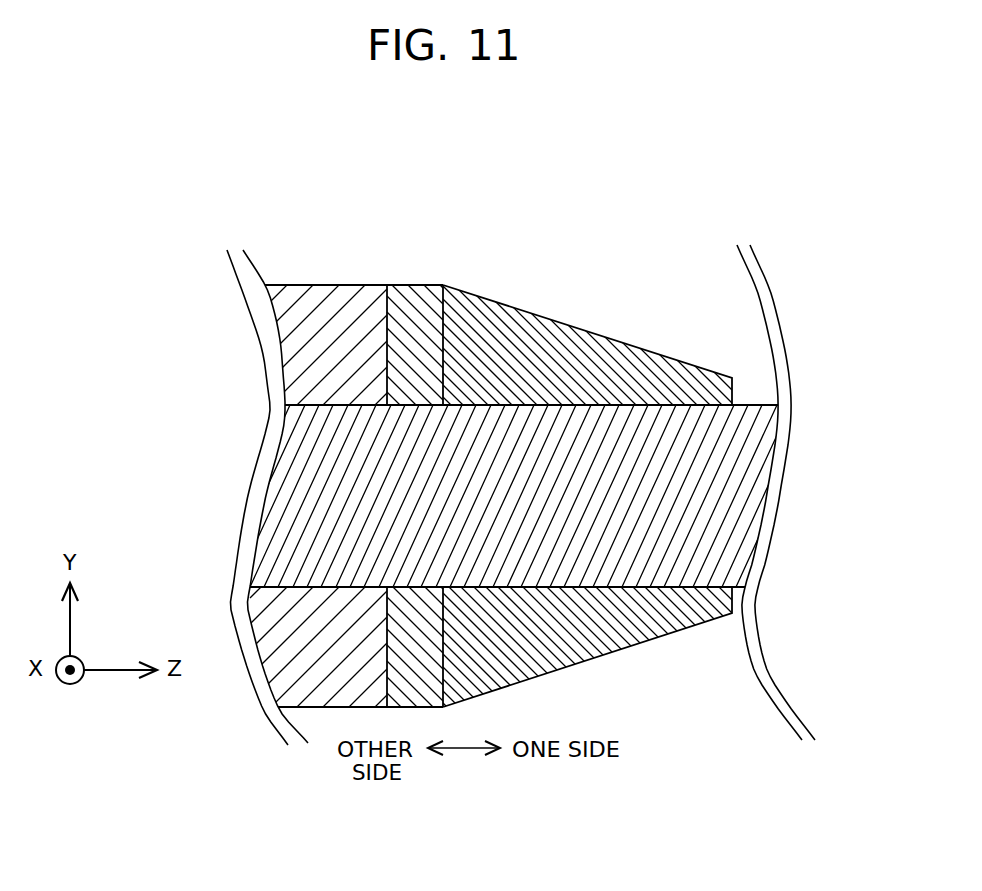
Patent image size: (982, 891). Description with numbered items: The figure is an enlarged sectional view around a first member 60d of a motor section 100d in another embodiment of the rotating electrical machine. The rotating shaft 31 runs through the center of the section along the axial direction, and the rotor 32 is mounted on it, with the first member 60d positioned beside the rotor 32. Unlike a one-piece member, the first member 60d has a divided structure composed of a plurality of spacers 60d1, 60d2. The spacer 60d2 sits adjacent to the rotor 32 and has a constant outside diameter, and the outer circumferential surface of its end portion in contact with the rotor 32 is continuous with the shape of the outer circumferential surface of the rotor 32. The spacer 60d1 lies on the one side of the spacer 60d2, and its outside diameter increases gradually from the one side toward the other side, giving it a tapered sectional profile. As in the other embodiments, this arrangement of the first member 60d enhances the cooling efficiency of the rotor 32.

The motor section 100d is at (538, 438).
The rotating shaft 31 is at (725, 463).
The rotor 32 is at (335, 315).
The first member 60d is at (559, 442).
The spacer 60d1 is at (490, 327).
The spacer 60d2 is at (419, 313).